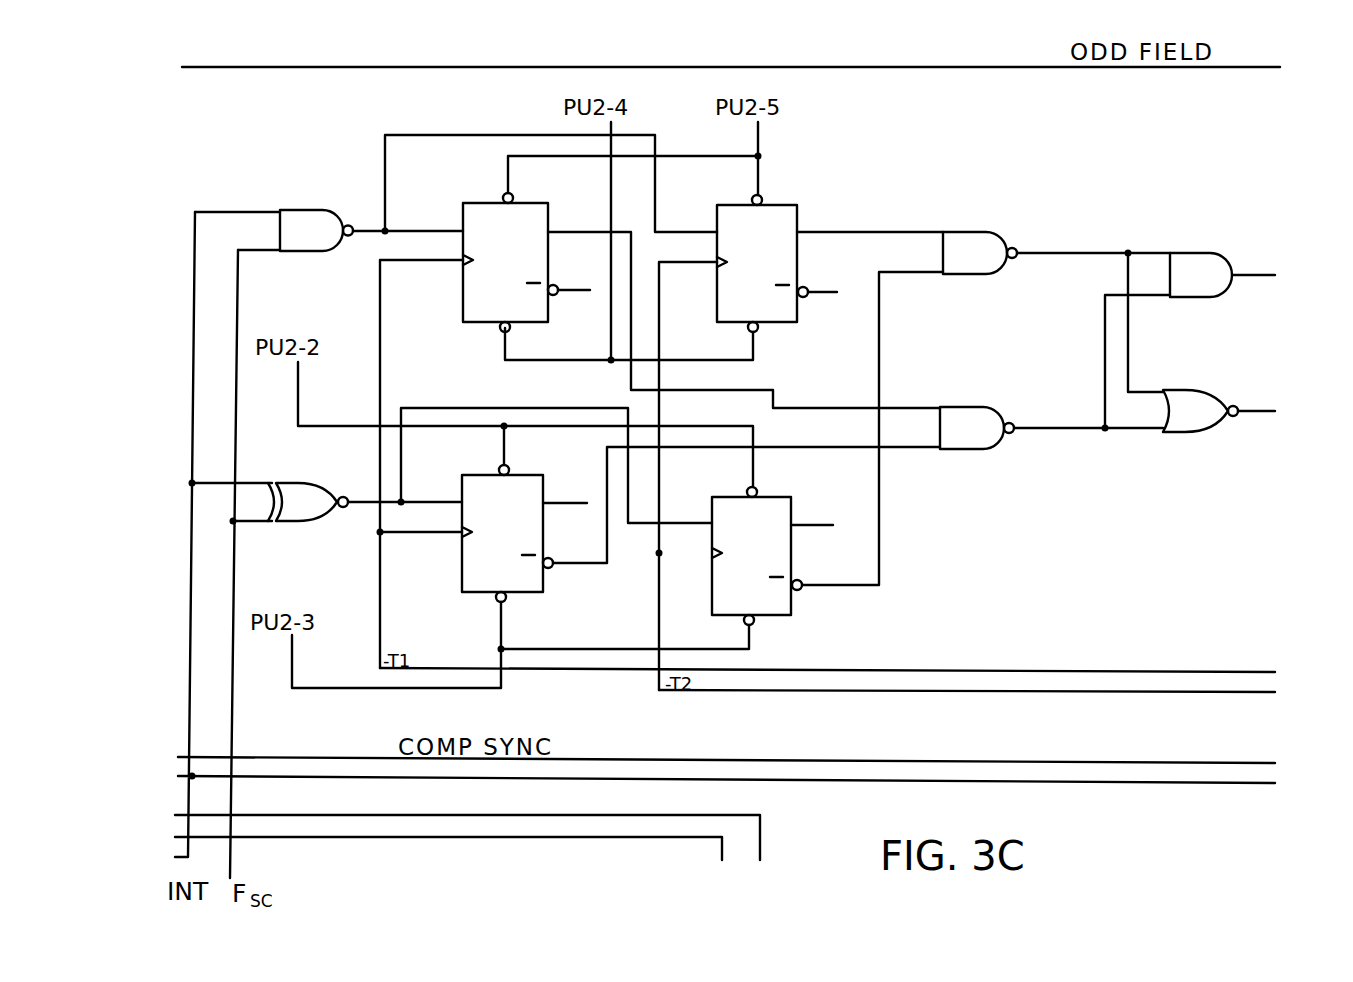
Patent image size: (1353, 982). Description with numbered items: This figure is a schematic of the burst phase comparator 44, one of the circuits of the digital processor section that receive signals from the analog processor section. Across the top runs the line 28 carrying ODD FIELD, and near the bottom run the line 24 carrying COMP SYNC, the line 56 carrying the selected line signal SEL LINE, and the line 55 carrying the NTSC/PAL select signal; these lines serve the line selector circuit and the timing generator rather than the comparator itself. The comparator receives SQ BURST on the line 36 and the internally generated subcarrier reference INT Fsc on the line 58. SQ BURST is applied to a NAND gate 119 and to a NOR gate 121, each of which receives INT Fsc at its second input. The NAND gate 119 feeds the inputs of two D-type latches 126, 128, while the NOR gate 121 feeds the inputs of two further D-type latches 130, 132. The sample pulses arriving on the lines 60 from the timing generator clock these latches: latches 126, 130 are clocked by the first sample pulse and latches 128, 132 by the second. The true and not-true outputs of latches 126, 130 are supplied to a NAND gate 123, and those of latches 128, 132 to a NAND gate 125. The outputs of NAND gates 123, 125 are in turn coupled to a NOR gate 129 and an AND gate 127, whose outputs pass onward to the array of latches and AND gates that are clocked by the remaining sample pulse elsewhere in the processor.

The line 28 is at (888, 66).
The burst phase comparator 44 is at (1068, 168).
The line 36 is at (190, 600).
The line 58 is at (233, 588).
The line 24 is at (268, 757).
The line 56 is at (270, 815).
The line 55 is at (268, 837).
The lines 60 is at (1237, 698).
The NAND gate 119 is at (300, 255).
The NOR gate 121 is at (287, 515).
The NAND gate 123 is at (990, 421).
The NAND gate 125 is at (993, 244).
The AND gate 127 is at (1222, 262).
The NOR gate 129 is at (1215, 403).
The latch 126 is at (463, 287).
The latch 128 is at (785, 210).
The latch 130 is at (462, 578).
The latch 132 is at (782, 503).